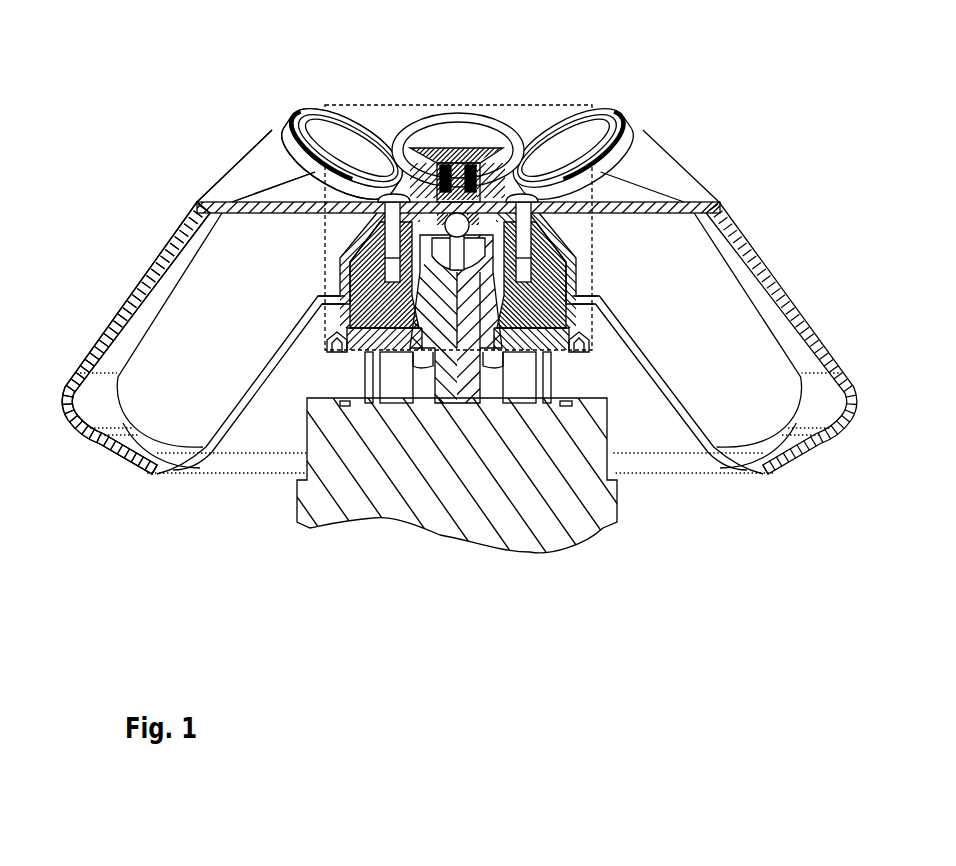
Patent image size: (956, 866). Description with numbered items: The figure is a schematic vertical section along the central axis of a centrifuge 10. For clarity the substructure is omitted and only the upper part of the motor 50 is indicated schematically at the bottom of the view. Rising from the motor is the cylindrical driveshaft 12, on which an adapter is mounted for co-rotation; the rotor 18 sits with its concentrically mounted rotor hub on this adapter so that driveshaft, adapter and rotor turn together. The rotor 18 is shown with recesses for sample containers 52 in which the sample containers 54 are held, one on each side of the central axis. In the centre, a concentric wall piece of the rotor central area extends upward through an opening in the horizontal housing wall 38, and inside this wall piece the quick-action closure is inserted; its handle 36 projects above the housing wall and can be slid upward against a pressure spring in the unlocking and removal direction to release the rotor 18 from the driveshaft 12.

The centrifuge 10 is at (812, 99).
The driveshaft 12 is at (455, 360).
The rotor 18 is at (150, 221).
The handle 36 is at (435, 143).
The housing wall 38 is at (653, 202).
The motor 50 is at (318, 512).
The recesses for sample containers 52 is at (273, 180).
The sample containers 54 is at (290, 135).